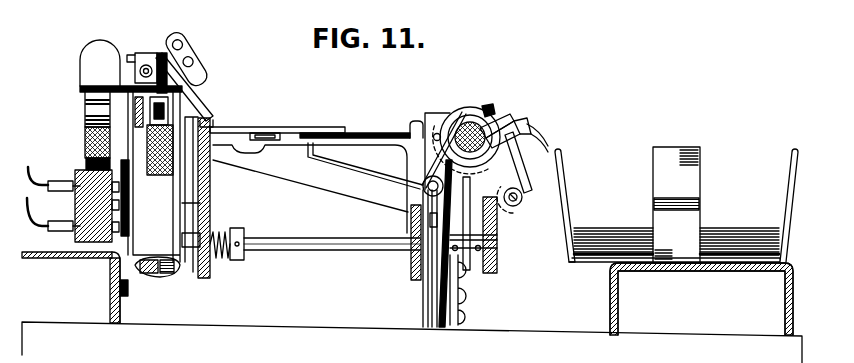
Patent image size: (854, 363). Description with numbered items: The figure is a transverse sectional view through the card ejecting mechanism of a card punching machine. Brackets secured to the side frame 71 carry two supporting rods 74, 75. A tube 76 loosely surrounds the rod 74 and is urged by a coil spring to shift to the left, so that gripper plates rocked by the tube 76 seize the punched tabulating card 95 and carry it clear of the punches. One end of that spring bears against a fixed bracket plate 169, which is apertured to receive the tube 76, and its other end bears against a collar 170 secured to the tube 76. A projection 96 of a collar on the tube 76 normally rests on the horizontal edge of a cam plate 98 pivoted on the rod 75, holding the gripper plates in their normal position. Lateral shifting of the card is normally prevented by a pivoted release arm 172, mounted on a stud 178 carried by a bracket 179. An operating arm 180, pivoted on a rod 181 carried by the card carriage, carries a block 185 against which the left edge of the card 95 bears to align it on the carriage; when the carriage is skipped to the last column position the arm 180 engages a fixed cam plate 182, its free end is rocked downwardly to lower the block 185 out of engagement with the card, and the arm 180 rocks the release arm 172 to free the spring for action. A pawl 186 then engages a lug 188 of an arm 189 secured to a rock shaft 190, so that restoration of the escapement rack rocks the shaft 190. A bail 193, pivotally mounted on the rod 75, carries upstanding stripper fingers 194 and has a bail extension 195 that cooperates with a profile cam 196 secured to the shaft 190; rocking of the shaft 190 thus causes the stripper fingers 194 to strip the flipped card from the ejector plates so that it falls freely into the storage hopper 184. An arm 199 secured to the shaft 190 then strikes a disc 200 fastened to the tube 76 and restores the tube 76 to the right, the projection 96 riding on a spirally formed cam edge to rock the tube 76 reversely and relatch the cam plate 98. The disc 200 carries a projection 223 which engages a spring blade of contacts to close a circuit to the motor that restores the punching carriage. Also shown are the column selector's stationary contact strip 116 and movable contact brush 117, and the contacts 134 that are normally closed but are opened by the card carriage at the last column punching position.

The side frame 71 is at (412, 268).
The supporting rod 74 is at (488, 118).
The supporting rod 75 is at (518, 204).
The tube 76 is at (502, 120).
The punched tabulating card 95 is at (717, 240).
The projection of the collar 96 is at (508, 127).
The cam plate 98 is at (561, 151).
The stationary contact strip 116 is at (100, 258).
The movable contact brush 117 is at (131, 218).
The contacts 134 is at (84, 133).
The fixed bracket plate 169 is at (518, 130).
The collar 170 is at (471, 107).
The release arm 172 is at (357, 173).
The stud 178 is at (418, 193).
The bracket 179 is at (402, 249).
The operating arm 180 is at (315, 131).
The rod 181 is at (146, 64).
The fixed cam plate 182 is at (205, 63).
The storage hopper 184 is at (610, 222).
The block 185 is at (266, 141).
The pawl 186 is at (187, 119).
The lug 188 is at (204, 106).
The arm 189 is at (213, 201).
The rock shaft 190 is at (280, 244).
The bail 193 is at (535, 188).
The stripper fingers 194 is at (532, 136).
The bail extension 195 is at (506, 220).
The profile cam 196 is at (492, 232).
The arm 199 is at (468, 268).
The disc 200 is at (481, 109).
The projection 223 is at (494, 108).